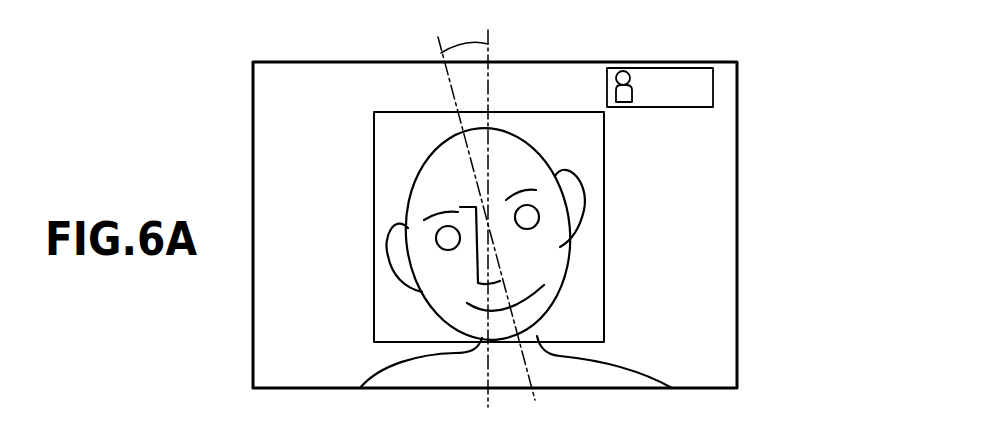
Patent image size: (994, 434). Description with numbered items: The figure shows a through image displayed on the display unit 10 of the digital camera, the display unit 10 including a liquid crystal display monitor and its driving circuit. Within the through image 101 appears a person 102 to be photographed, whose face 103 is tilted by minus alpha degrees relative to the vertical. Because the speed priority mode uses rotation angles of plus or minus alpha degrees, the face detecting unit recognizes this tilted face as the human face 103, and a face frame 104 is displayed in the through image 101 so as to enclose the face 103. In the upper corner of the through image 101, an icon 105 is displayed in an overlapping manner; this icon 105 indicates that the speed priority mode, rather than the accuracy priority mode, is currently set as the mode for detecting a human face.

The display unit 10 is at (740, 86).
The through image 101 is at (707, 233).
The person 102 is at (618, 378).
The face 103 is at (430, 150).
The face frame 104 is at (533, 111).
The icon 105 is at (653, 68).